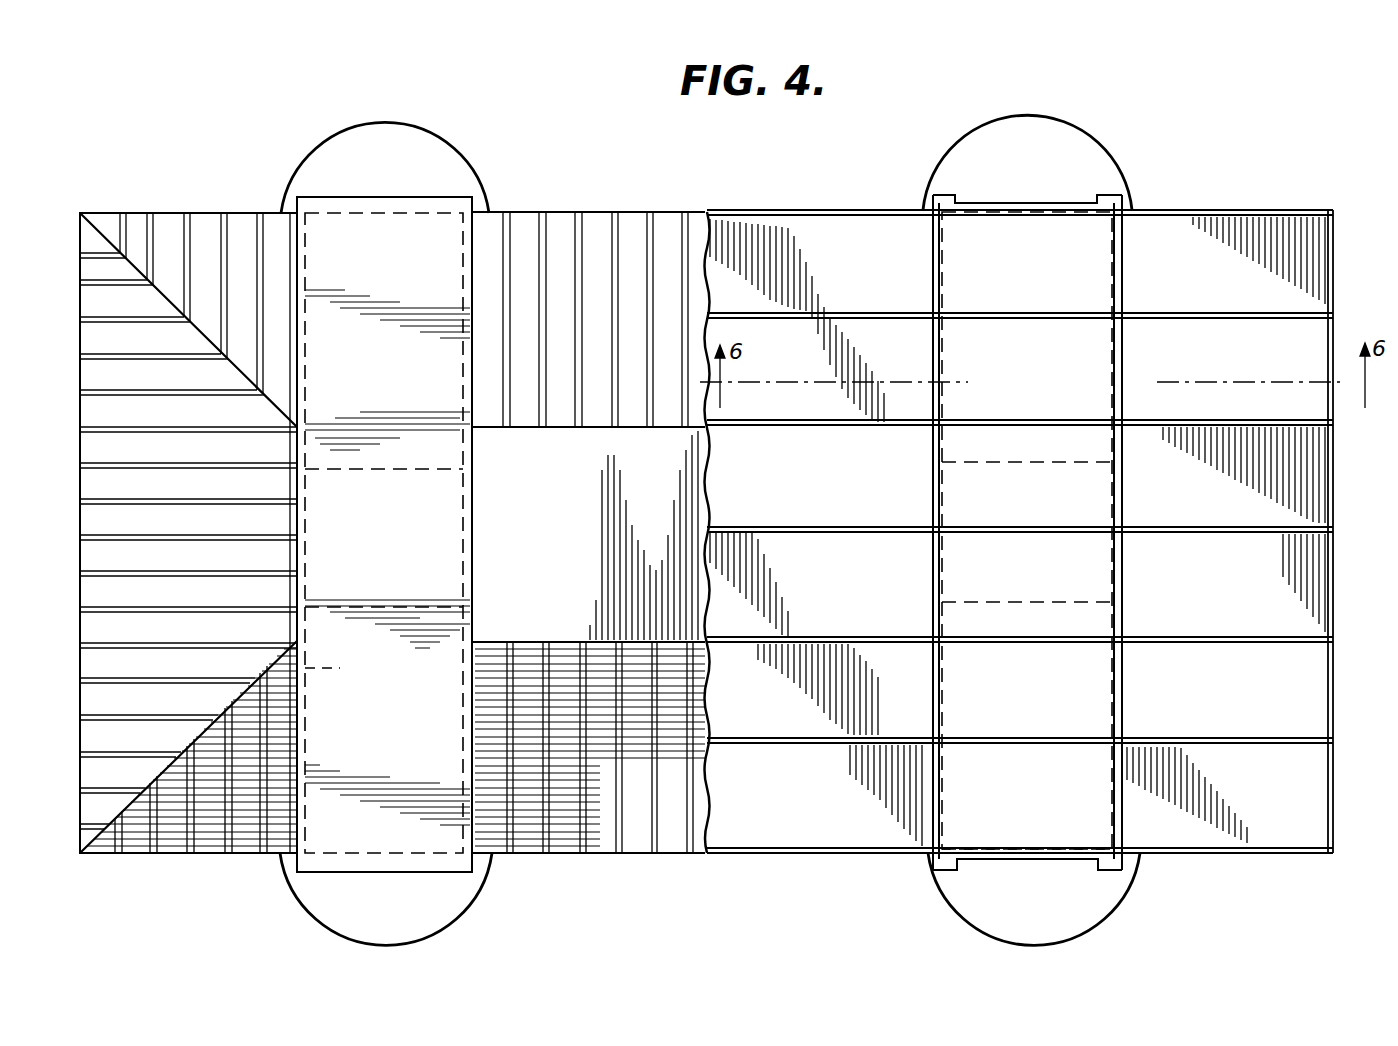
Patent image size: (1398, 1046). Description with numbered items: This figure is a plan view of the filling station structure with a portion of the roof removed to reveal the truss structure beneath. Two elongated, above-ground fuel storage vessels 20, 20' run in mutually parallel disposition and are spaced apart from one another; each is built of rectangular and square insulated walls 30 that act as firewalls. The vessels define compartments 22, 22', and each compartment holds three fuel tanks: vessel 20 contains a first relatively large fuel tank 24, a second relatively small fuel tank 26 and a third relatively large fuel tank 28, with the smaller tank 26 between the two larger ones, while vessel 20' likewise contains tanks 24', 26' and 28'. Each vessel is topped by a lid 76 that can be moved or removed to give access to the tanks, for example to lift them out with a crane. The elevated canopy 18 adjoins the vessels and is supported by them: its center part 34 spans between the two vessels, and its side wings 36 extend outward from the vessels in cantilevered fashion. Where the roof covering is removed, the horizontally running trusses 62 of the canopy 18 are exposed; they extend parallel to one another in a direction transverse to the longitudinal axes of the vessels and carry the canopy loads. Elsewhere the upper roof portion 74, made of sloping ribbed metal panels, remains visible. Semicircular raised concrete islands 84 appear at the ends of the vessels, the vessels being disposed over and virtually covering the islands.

The canopy 18 is at (76, 297).
The fuel storage vessel 20 is at (412, 517).
The fuel storage vessel 20' is at (1070, 518).
The compartment 22 is at (289, 183).
The compartment 22' is at (1134, 183).
The first fuel tank 24 is at (290, 661).
The first fuel tank 24' is at (1063, 766).
The second fuel tank 26 is at (356, 590).
The second fuel tank 26' is at (1062, 539).
The third fuel tank 28 is at (352, 451).
The third fuel tank 28' is at (1061, 397).
The walls 30 is at (429, 188).
The center part 34 is at (694, 230).
The side wings 36 is at (208, 232).
The trusses 62 is at (862, 318).
The upper roof portion 74 is at (108, 586).
The lid 76 is at (440, 440).
The raised concrete islands 84 is at (472, 916).